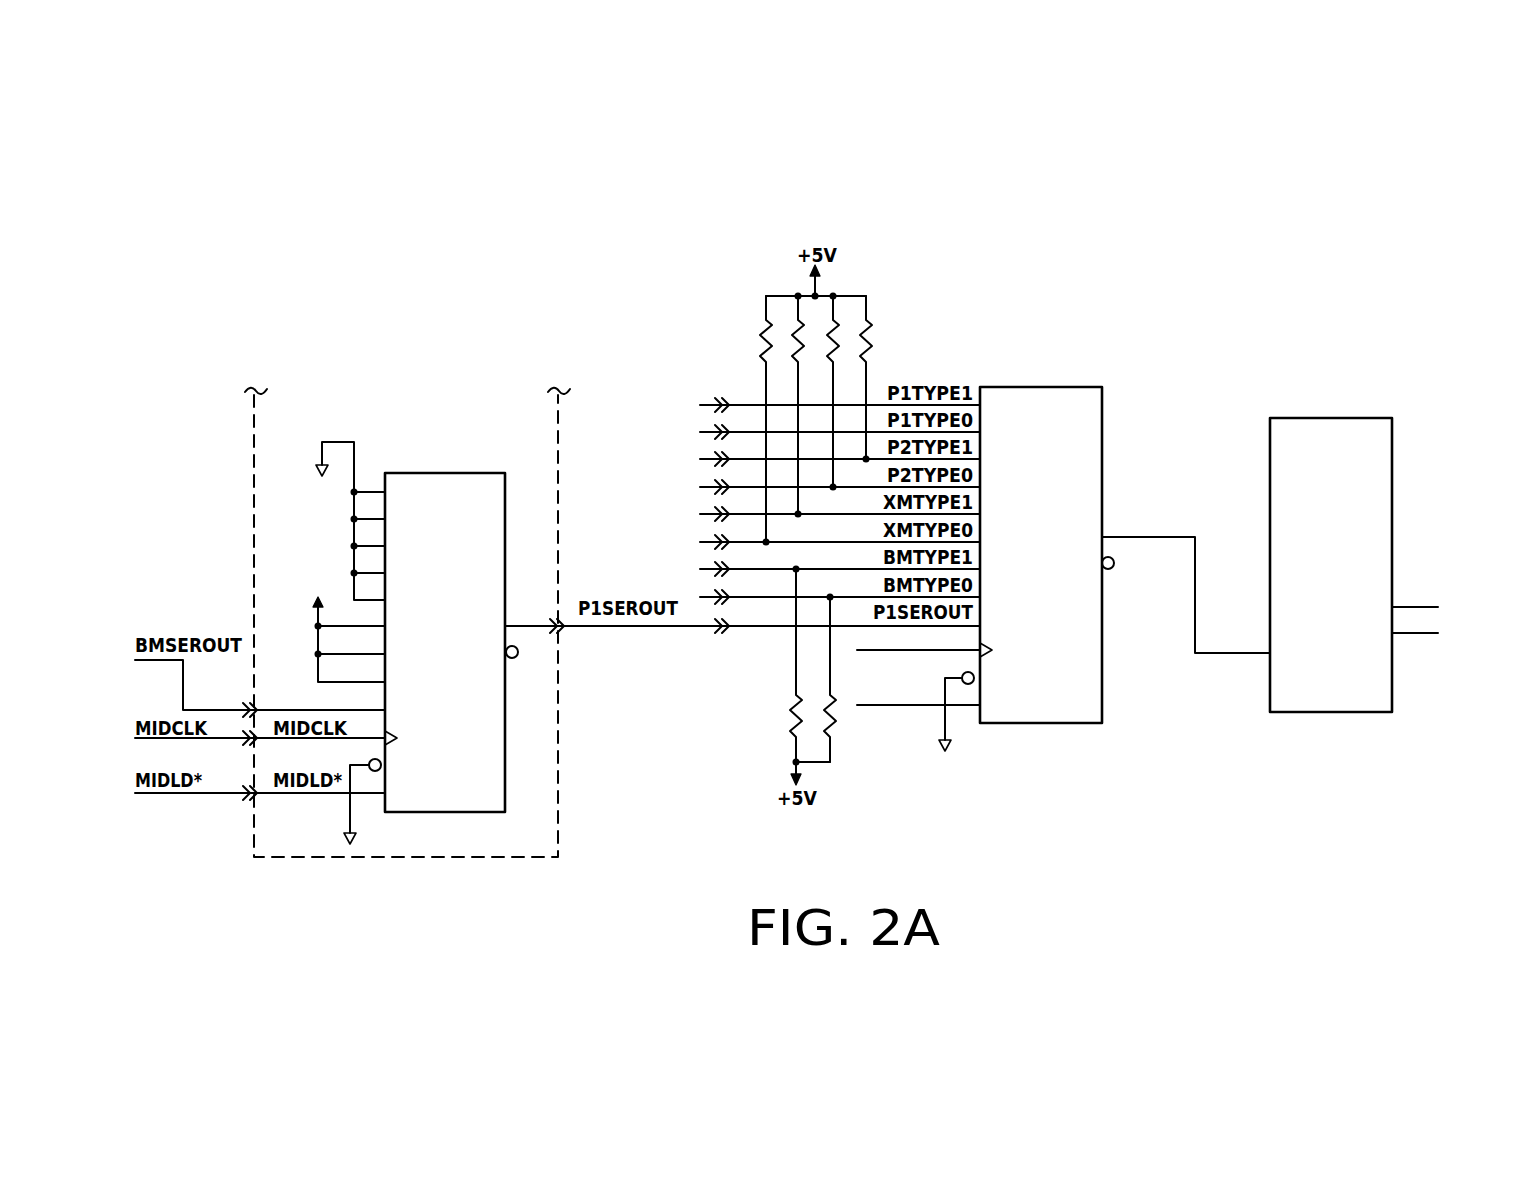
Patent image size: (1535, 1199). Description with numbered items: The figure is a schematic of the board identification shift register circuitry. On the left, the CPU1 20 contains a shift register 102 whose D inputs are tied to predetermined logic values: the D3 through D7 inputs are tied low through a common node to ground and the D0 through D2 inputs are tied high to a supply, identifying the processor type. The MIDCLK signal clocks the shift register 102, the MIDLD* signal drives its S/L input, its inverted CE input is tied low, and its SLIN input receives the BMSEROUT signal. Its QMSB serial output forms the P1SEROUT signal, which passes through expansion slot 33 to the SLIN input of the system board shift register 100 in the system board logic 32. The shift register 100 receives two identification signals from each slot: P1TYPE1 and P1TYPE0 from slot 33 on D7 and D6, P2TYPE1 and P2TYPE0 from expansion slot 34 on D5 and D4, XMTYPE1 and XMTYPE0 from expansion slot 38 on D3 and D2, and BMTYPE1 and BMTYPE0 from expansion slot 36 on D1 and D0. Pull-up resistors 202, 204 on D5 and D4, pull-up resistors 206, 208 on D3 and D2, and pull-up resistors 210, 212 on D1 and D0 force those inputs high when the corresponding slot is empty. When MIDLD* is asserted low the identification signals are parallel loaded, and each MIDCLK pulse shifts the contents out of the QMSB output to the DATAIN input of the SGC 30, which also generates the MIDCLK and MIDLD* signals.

The CPU1 20 is at (562, 430).
The SGC 30 is at (1363, 418).
The system board logic 32 is at (1083, 236).
The expansion slot 33 is at (243, 708).
The expansion slot 34 is at (712, 447).
The expansion slot 36 is at (712, 555).
The expansion slot 38 is at (712, 501).
The shift register 100 is at (1073, 387).
The shift register 102 is at (464, 471).
The pull-up resistor 202 is at (868, 338).
The pull-up resistor 204 is at (838, 328).
The pull-up resistor 206 is at (792, 328).
The pull-up resistor 208 is at (762, 338).
The pull-up resistor 210 is at (790, 727).
The pull-up resistor 212 is at (836, 728).